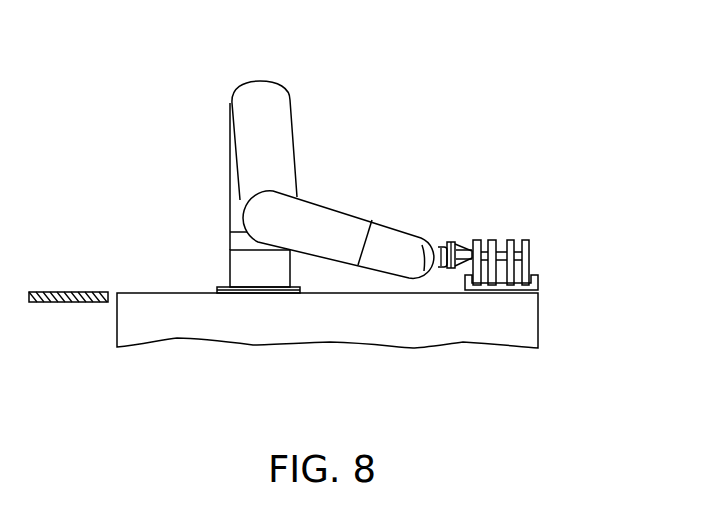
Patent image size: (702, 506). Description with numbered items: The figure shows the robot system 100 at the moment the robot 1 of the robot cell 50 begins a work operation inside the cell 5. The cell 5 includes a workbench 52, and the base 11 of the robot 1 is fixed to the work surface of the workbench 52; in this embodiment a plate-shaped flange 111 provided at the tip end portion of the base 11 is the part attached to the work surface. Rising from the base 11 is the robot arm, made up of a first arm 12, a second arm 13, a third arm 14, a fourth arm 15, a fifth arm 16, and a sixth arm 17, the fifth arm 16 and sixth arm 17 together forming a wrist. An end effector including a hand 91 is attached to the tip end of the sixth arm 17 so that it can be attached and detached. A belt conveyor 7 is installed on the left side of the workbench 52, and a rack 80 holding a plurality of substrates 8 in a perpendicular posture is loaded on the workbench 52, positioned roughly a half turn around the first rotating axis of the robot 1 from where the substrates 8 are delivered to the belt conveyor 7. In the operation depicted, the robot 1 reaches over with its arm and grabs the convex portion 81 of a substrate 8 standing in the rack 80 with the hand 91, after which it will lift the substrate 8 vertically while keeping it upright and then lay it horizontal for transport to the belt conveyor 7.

The robot 1 is at (296, 61).
The robot system 100 is at (481, 80).
The robot cell 50 is at (506, 154).
The cell 5 is at (550, 311).
The workbench 52 is at (397, 327).
The belt conveyor 7 is at (63, 305).
The base 11 is at (247, 293).
The flange 111 is at (283, 293).
The first arm 12 is at (250, 270).
The second arm 13 is at (250, 115).
The third arm 14 is at (318, 210).
The fourth arm 15 is at (393, 242).
The fifth arm 16 is at (428, 248).
The sixth arm 17 is at (447, 247).
The substrate 8 is at (531, 250).
The rack 80 is at (515, 293).
The convex portion 81 is at (521, 250).
The hand 91 is at (463, 252).